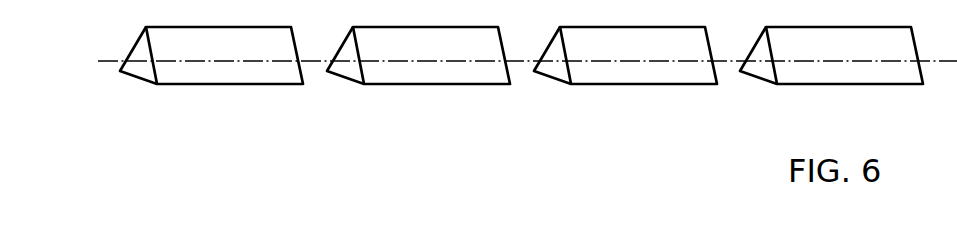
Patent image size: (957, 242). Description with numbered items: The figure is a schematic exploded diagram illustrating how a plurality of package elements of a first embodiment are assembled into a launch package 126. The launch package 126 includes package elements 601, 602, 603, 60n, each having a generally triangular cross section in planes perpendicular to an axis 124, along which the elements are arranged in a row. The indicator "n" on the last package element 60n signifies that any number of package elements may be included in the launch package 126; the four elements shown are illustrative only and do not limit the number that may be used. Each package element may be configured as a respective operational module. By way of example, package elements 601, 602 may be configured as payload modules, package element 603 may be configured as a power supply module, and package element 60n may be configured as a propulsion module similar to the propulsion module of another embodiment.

The axis 124 is at (100, 62).
The launch package 126 is at (252, 134).
The package element 601 is at (230, 84).
The package element 602 is at (449, 84).
The package element 603 is at (648, 84).
The package element 60n is at (842, 84).